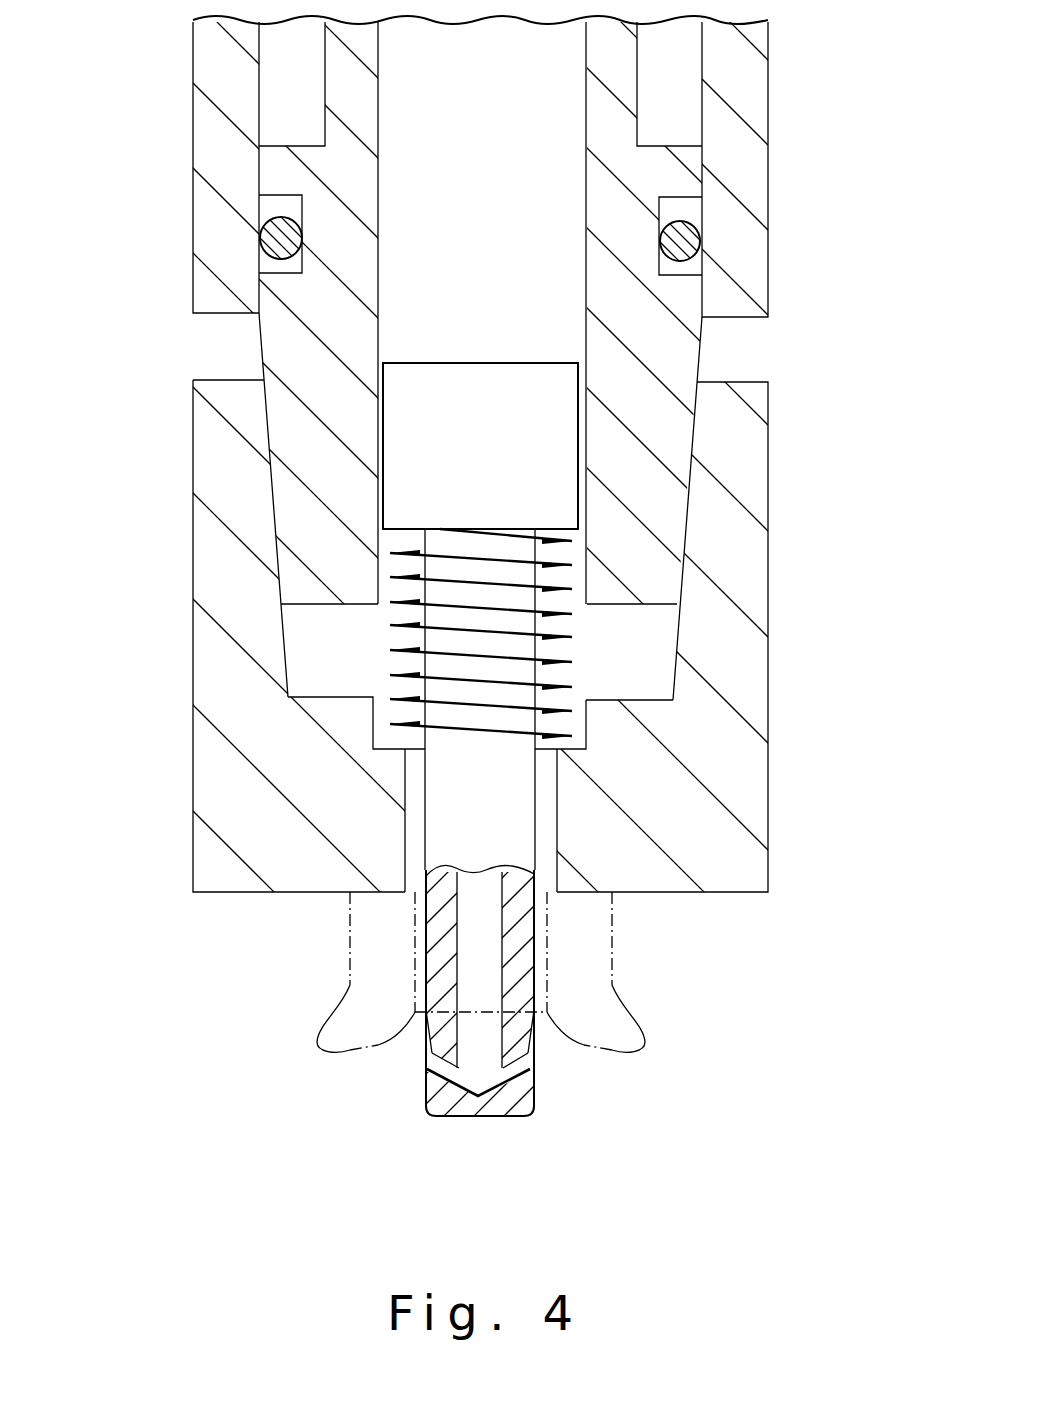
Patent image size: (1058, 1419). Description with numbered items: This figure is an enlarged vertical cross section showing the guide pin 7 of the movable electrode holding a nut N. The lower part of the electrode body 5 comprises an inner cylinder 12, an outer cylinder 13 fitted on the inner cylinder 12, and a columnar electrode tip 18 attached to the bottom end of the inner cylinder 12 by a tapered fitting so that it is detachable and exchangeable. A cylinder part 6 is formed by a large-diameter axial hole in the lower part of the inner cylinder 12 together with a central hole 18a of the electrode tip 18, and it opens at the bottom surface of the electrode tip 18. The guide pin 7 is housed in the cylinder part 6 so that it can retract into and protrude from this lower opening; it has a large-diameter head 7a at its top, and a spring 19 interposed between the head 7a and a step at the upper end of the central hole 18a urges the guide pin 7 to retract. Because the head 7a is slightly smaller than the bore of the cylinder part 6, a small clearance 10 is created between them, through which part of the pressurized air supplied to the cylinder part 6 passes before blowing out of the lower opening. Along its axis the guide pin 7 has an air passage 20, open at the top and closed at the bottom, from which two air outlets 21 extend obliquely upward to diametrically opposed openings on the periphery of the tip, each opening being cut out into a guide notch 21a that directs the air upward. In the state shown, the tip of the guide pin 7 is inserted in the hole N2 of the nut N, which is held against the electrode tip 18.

The electrode body 5 is at (821, 93).
The cylinder part 6 is at (583, 296).
The guide pin 7 is at (537, 812).
The head 7a is at (552, 434).
The clearance 10 is at (378, 437).
The inner cylinder 12 is at (259, 352).
The outer cylinder 13 is at (193, 198).
The electrode tip 18 is at (193, 670).
The central hole 18a is at (405, 823).
The spring 19 is at (572, 640).
The air passage 20 is at (487, 948).
The air outlet 21 is at (518, 1072).
The guide notch 21a is at (537, 1052).
The nut N is at (350, 968).
The hole N2 is at (545, 962).